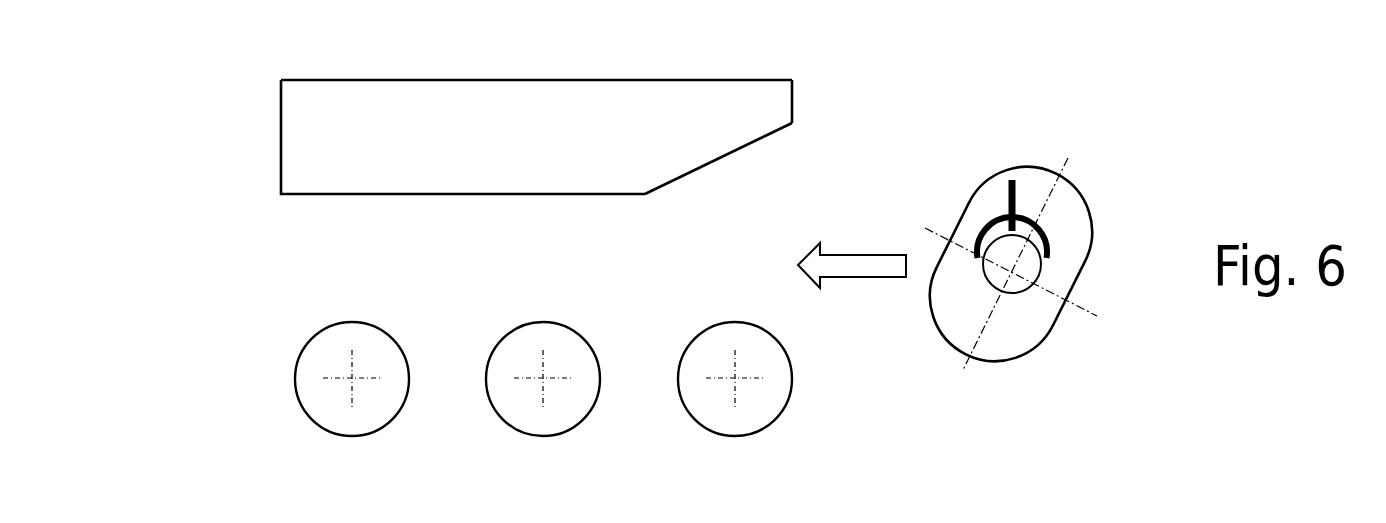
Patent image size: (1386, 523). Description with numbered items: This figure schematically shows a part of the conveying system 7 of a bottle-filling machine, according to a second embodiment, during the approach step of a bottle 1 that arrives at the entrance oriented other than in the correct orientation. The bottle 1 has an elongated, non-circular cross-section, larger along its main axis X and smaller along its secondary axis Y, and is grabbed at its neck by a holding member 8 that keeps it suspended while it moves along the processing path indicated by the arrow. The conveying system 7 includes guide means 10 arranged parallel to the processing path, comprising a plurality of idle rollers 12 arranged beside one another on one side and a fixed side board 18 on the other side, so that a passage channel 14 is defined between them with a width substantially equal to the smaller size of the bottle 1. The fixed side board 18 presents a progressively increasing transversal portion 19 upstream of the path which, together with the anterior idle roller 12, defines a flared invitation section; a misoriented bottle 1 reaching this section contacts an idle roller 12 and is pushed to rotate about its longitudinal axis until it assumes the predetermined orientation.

The conveying system 7 is at (240, 158).
The guide means 10 is at (835, 110).
The fixed side board 18 is at (480, 95).
The progressively increasing transversal portion 19 is at (735, 152).
The passage channel 14 is at (480, 277).
The idle rollers 12 is at (577, 346).
The bottle 1 is at (1075, 223).
The holding members 8 is at (1008, 205).